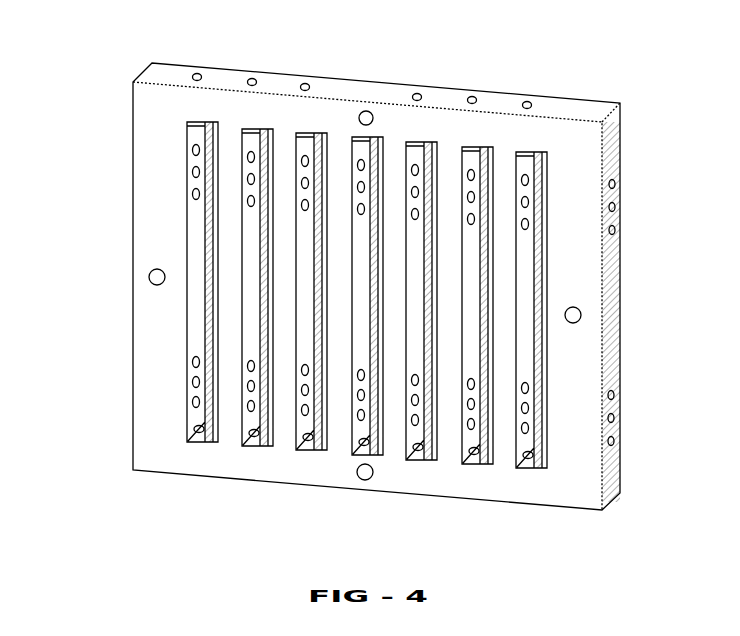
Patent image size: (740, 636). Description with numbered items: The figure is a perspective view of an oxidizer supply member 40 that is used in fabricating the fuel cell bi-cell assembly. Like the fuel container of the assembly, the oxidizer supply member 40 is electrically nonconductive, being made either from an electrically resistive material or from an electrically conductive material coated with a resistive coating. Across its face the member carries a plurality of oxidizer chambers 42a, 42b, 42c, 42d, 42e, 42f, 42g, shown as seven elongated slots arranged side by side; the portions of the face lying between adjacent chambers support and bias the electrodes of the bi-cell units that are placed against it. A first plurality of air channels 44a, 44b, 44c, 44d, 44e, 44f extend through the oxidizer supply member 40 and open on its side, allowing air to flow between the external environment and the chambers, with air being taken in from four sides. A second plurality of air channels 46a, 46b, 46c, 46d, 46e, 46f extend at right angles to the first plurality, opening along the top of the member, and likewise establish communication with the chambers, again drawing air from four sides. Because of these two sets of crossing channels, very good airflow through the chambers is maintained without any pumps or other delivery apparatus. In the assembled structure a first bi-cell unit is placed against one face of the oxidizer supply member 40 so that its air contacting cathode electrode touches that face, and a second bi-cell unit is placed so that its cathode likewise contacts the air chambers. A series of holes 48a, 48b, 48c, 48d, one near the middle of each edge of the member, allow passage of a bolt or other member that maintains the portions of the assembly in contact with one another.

The oxidizer supply member 40 is at (125, 153).
The oxidizer chamber 42a is at (208, 272).
The oxidizer chamber 42b is at (266, 420).
The oxidizer chamber 42c is at (320, 422).
The oxidizer chamber 42d is at (376, 425).
The oxidizer chamber 42e is at (432, 423).
The oxidizer chamber 42f is at (487, 423).
The oxidizer chamber 42g is at (543, 430).
The air channel 44a is at (618, 183).
The air channel 44b is at (618, 206).
The air channel 44c is at (618, 229).
The air channel 44d is at (616, 394).
The air channel 44e is at (616, 417).
The air channel 44f is at (616, 441).
The air channel 46a is at (197, 73).
The air channel 46b is at (252, 78).
The air channel 46c is at (305, 83).
The air channel 46d is at (417, 93).
The air channel 46e is at (472, 96).
The air channel 46f is at (527, 101).
The hole 48a is at (366, 111).
The hole 48b is at (581, 312).
The hole 48c is at (365, 480).
The hole 48d is at (150, 281).